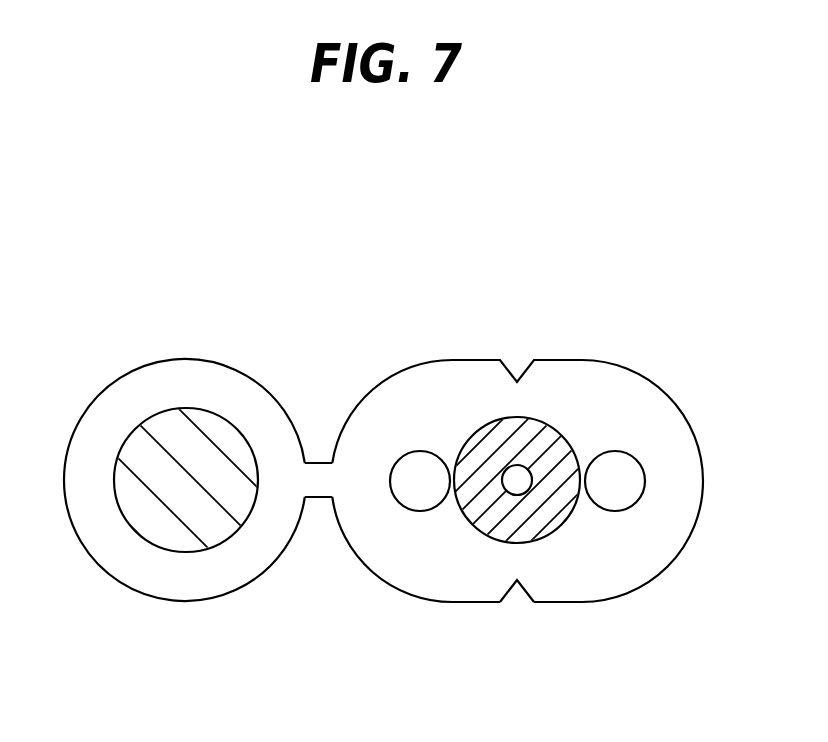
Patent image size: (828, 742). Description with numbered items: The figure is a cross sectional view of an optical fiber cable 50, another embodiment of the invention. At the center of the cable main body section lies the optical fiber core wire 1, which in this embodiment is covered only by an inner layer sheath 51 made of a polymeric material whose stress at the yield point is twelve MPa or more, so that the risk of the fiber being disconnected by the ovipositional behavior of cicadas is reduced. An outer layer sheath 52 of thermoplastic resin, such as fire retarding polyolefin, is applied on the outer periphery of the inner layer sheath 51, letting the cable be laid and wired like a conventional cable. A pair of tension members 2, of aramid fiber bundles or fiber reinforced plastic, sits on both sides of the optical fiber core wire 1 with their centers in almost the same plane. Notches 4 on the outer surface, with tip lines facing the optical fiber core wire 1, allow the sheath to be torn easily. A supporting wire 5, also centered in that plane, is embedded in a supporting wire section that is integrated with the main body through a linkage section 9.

The optical fiber cable 50 is at (684, 198).
The outer layer sheath 52 is at (392, 405).
The inner layer sheath 51 is at (502, 442).
The optical fiber core wire 1 is at (522, 477).
The tension member 2 is at (410, 495).
The notch 4 is at (522, 608).
The supporting wire 5 is at (167, 453).
The linkage section 9 is at (318, 477).